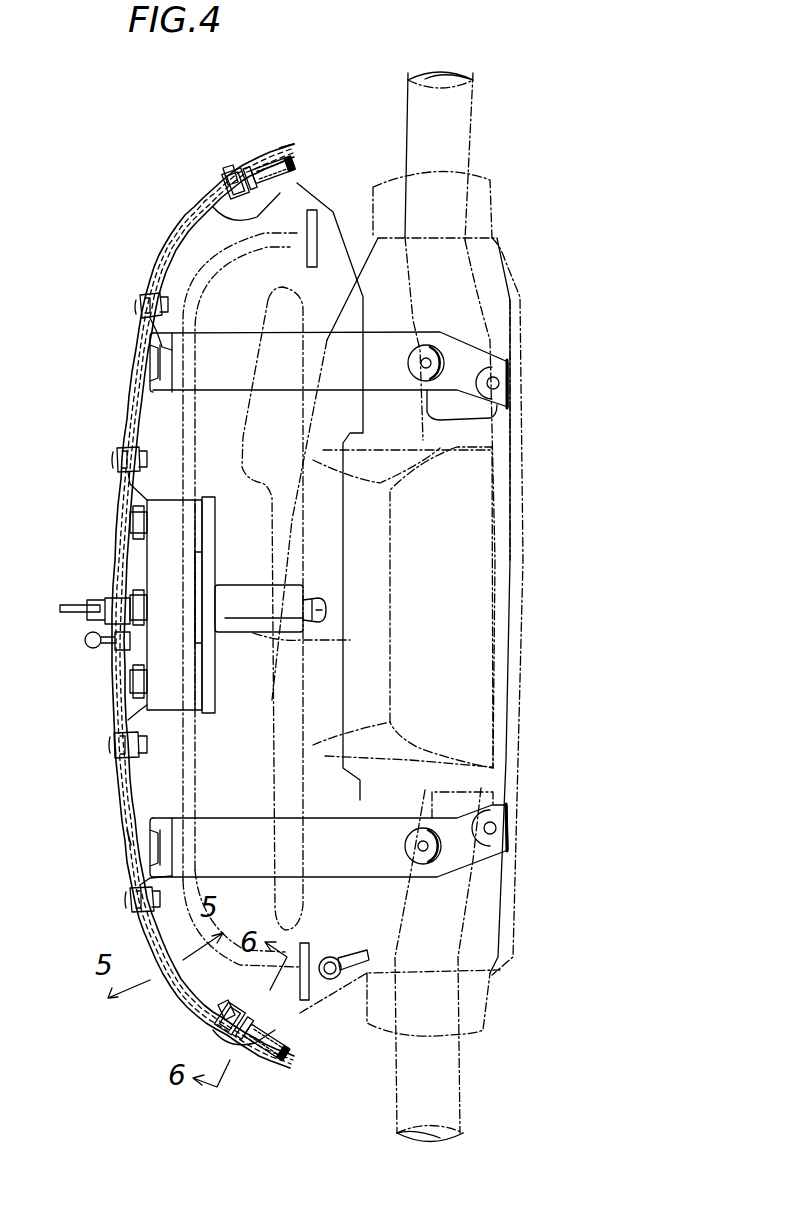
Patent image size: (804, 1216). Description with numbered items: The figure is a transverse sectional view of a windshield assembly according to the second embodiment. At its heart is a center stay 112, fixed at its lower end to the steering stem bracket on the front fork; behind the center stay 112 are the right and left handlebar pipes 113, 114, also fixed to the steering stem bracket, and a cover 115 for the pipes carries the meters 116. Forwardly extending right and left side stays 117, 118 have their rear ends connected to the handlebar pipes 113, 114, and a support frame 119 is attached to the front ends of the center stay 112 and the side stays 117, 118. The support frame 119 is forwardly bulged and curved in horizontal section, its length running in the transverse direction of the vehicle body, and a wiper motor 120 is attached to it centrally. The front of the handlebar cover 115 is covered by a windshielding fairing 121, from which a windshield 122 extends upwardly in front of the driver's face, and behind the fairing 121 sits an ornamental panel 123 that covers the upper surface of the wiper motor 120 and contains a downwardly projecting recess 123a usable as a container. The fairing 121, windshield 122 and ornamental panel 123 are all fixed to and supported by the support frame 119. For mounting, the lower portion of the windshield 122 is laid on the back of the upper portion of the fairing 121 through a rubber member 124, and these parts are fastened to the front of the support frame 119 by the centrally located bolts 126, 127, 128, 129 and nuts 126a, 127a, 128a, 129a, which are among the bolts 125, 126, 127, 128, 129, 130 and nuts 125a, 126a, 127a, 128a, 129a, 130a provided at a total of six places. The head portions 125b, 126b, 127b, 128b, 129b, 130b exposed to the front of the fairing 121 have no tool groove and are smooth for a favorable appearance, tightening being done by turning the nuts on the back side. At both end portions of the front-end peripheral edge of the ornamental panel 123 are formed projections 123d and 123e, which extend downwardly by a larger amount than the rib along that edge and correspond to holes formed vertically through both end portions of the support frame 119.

The center stay 112 is at (300, 637).
The right handlebar pipe 113 is at (463, 1097).
The left handlebar pipe 114 is at (473, 128).
The handlebar cover 115 is at (508, 455).
The meters 116 is at (390, 568).
The right side stay 117 is at (390, 847).
The left side stay 118 is at (383, 360).
The support frame 119 is at (140, 707).
The wiper motor 120 is at (157, 563).
The windshielding fairing 121 is at (123, 800).
The windshield 122 is at (123, 820).
The ornamental panel 123 is at (343, 697).
The recess 123a is at (245, 430).
The projection 123d is at (273, 1063).
The projection 123e is at (275, 158).
The rubber member 124 is at (127, 837).
The bolt 125 is at (207, 1020).
The nut 125a is at (225, 1005).
The head portion 125b is at (213, 1040).
The bolt 126 is at (127, 897).
The nut 126a is at (173, 877).
The head portion 126b is at (128, 907).
The bolt 127 is at (120, 740).
The nut 127a is at (123, 770).
The head portion 127b is at (112, 743).
The bolt 128 is at (127, 447).
The nut 128a is at (113, 492).
The head portion 128b is at (113, 457).
The bolt 129 is at (143, 297).
The nut 129a is at (143, 328).
The head portion 129b is at (137, 300).
The bolt 130 is at (250, 160).
The nut 130a is at (290, 188).
The head portion 130b is at (227, 170).